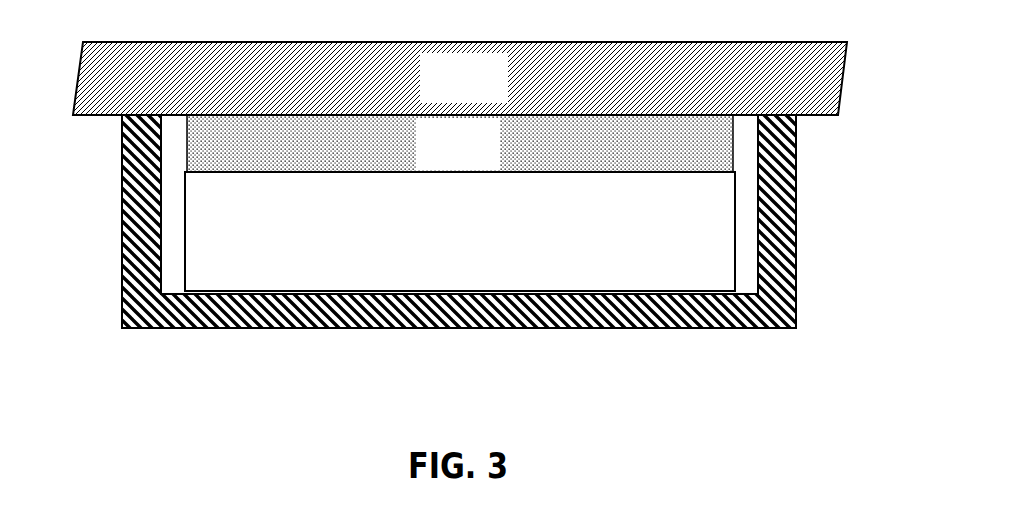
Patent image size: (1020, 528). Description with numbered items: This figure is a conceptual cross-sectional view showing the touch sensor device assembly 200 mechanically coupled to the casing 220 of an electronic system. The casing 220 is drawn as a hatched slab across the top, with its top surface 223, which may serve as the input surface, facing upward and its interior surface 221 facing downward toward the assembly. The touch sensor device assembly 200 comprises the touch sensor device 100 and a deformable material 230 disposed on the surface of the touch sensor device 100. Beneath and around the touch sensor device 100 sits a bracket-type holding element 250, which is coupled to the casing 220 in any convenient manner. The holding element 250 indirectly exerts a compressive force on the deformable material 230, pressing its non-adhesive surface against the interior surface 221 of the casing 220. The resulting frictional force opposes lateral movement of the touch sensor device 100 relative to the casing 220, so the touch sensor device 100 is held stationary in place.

The touch sensor device 100 is at (485, 249).
The touch sensor device assembly 200 is at (171, 278).
The casing 220 is at (489, 93).
The interior surface 221 is at (105, 117).
The top surface 223 is at (798, 42).
The deformable material 230 is at (480, 156).
The holding element 250 is at (393, 328).